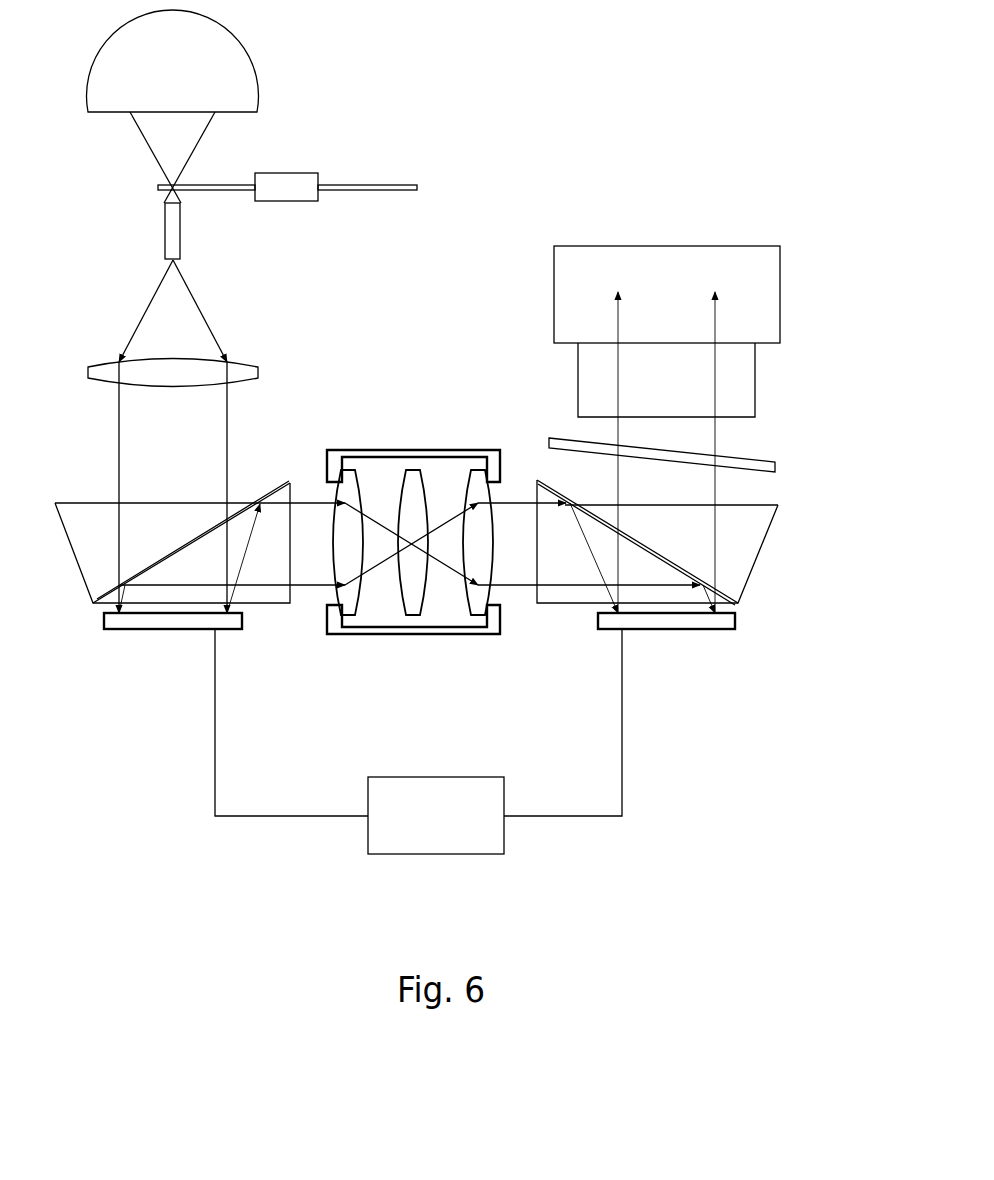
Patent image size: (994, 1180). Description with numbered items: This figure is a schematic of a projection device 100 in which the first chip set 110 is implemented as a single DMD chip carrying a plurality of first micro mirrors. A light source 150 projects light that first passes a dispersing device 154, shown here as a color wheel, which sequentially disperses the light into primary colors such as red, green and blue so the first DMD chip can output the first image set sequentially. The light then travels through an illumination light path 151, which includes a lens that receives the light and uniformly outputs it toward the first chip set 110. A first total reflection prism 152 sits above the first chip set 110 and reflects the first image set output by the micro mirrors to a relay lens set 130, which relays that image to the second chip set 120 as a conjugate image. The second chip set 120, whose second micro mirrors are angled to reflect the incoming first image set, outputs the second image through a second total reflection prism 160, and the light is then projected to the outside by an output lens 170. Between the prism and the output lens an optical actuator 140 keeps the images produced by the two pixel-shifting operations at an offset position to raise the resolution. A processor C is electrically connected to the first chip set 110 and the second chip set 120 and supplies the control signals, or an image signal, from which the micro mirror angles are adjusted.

The projection device 100 is at (680, 72).
The first chip set 110 is at (167, 618).
The second chip set 120 is at (660, 618).
The relay lens set 130 is at (335, 632).
The optical actuator 140 is at (762, 470).
The light source 150 is at (230, 66).
The illumination light path 151 is at (240, 372).
The first total reflection prism 152 is at (98, 515).
The dispersing device 154 is at (293, 183).
The second total reflection prism 160 is at (743, 565).
The output lens 170 is at (767, 298).
The processor C is at (446, 845).